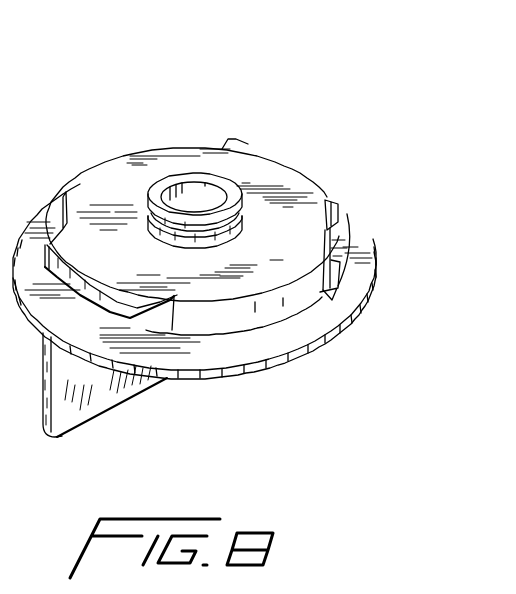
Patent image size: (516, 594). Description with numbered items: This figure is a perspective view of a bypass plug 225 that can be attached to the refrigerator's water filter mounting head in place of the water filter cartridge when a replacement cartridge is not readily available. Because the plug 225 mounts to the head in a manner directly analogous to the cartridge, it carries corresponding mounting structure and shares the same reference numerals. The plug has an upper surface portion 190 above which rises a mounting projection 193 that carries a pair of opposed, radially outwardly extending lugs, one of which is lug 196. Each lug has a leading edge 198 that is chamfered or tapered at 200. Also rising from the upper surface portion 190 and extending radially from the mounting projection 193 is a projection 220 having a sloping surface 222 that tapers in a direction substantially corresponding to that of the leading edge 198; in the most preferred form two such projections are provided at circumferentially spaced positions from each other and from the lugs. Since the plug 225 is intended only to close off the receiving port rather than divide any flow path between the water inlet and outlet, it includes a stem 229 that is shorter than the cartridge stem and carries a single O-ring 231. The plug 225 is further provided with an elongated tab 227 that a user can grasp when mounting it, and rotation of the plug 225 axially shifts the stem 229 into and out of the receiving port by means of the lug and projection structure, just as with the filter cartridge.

The bypass plug 225 is at (238, 109).
The upper surface portion 190 is at (293, 343).
The mounting projection 193 is at (210, 324).
The stem 229 is at (167, 182).
The O-ring 231 is at (262, 150).
The lug 196 is at (327, 197).
The projection 220 is at (346, 214).
The sloping surface 222 is at (331, 296).
The chamfer 200 is at (134, 320).
The leading edge 198 is at (113, 306).
The elongated tab 227 is at (100, 413).